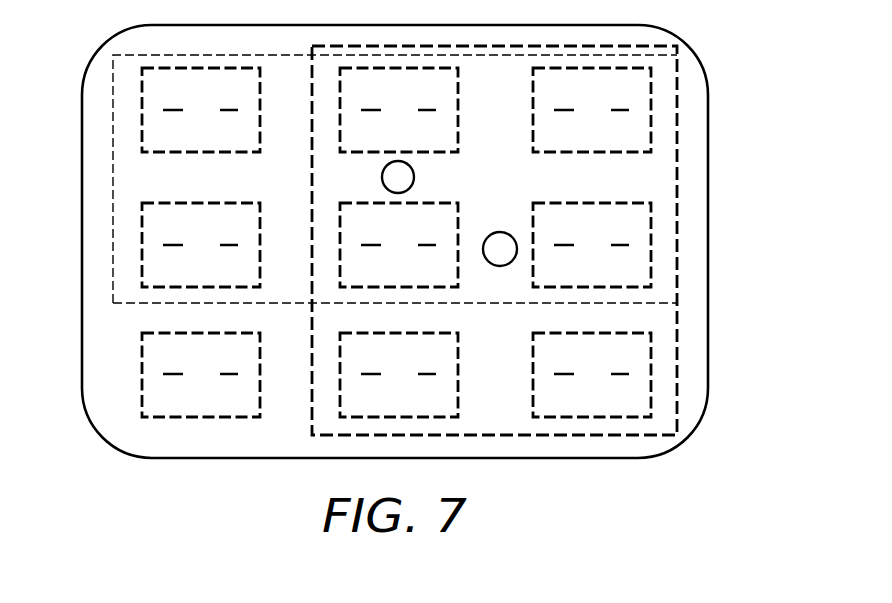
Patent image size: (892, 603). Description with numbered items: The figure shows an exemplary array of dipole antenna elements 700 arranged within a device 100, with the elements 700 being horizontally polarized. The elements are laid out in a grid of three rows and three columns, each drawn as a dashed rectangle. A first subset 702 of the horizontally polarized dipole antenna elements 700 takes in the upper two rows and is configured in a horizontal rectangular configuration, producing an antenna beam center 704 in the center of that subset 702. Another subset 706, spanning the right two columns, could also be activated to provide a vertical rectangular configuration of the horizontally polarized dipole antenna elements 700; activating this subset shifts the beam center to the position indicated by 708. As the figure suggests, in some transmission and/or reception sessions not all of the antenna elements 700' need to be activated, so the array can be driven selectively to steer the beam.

The device housing 100 is at (760, 123).
The horizontally polarized dipole antenna elements 700 is at (339, 110).
The antenna elements 700' is at (333, 375).
The first subset 702 is at (113, 178).
The antenna beam center 704 is at (414, 174).
The another subset 706 is at (677, 363).
The shifted beam center 708 is at (501, 232).